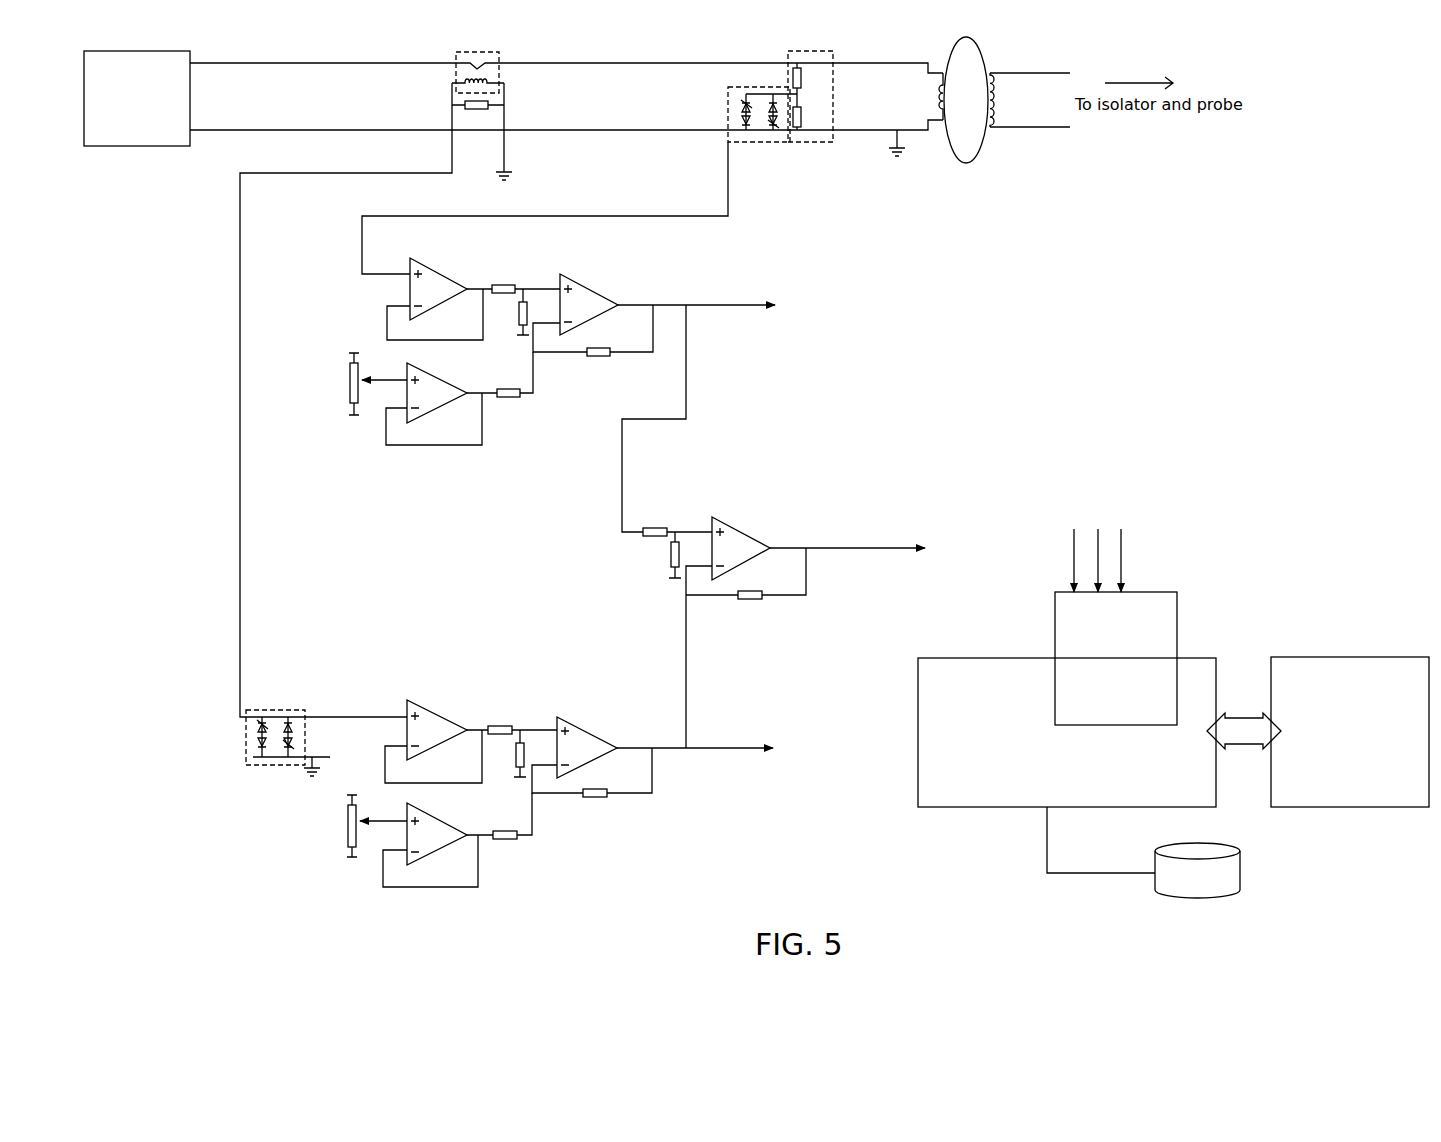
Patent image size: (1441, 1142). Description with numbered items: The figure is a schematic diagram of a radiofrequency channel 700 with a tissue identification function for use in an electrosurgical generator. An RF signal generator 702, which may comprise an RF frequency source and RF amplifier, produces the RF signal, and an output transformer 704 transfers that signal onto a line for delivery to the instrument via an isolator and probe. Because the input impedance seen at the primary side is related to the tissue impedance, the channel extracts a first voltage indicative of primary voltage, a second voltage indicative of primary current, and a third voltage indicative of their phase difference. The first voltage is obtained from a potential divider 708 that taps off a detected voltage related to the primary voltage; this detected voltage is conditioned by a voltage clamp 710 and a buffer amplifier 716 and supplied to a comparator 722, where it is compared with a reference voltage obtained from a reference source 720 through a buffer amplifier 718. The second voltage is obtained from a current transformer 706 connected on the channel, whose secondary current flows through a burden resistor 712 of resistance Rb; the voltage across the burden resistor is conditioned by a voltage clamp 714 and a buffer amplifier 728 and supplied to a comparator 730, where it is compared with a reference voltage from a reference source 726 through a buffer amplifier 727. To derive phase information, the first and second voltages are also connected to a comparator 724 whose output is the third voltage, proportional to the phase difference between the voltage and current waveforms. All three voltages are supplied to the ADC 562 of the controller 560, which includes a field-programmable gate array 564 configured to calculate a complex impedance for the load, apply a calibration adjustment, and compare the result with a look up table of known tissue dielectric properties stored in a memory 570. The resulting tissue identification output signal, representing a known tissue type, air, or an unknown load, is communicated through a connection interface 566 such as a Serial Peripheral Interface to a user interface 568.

The radiofrequency channel 700 is at (1212, 317).
The RF signal generator 702 is at (125, 148).
The output transformer 704 is at (985, 145).
The current transformer 706 is at (499, 72).
The potential divider 708 is at (823, 142).
The voltage clamp 710 is at (760, 142).
The burden resistor 712 is at (453, 96).
The voltage clamp 714 is at (263, 765).
The buffer amplifier 716 is at (443, 280).
The buffer amplifier 718 is at (438, 376).
The reference source 720 is at (347, 383).
The comparator 722 is at (593, 295).
The comparator 724 is at (745, 533).
The reference source 726 is at (343, 830).
The buffer amplifier 727 is at (430, 817).
The buffer amplifier 728 is at (433, 710).
The comparator 730 is at (590, 732).
The controller 560 is at (916, 733).
The ADC 562 is at (1177, 607).
The field-programmable gate array 564 is at (1062, 684).
The connection interface 566 is at (1201, 668).
The user interface 568 is at (1392, 657).
The memory 570 is at (1242, 868).